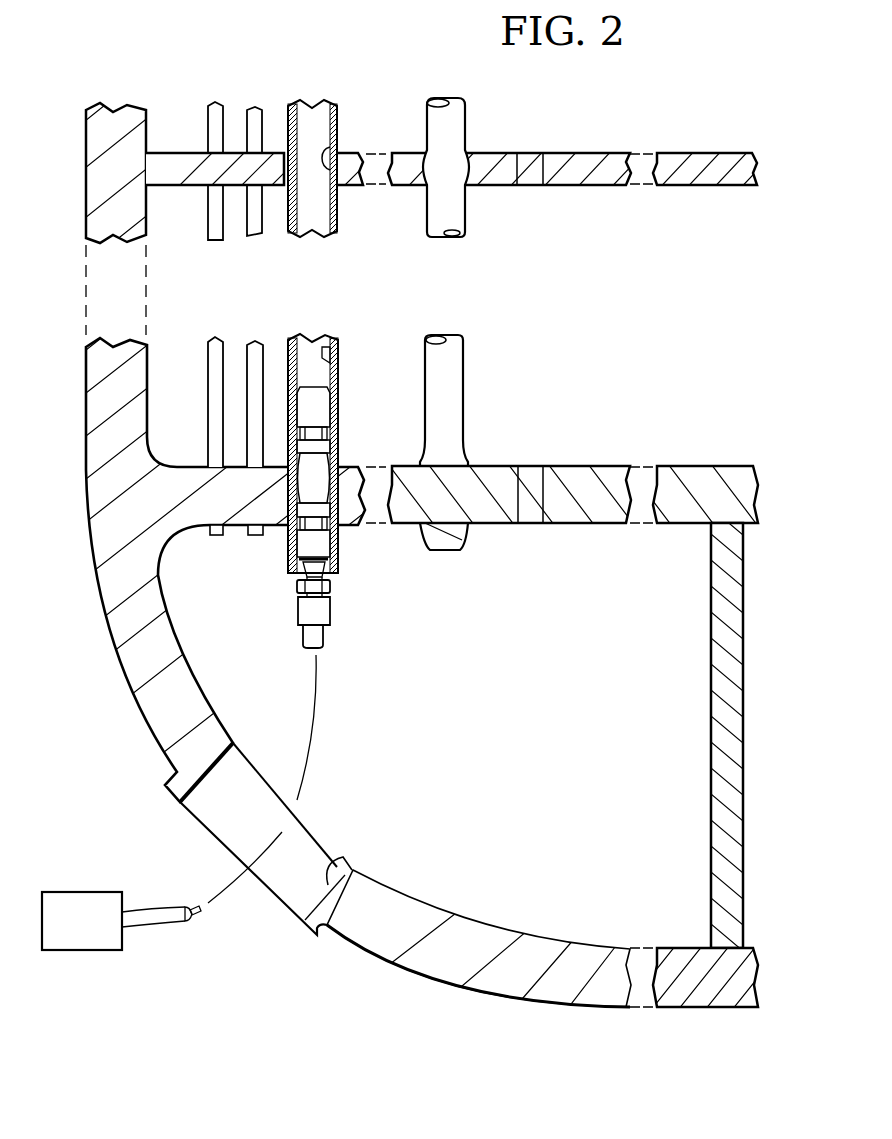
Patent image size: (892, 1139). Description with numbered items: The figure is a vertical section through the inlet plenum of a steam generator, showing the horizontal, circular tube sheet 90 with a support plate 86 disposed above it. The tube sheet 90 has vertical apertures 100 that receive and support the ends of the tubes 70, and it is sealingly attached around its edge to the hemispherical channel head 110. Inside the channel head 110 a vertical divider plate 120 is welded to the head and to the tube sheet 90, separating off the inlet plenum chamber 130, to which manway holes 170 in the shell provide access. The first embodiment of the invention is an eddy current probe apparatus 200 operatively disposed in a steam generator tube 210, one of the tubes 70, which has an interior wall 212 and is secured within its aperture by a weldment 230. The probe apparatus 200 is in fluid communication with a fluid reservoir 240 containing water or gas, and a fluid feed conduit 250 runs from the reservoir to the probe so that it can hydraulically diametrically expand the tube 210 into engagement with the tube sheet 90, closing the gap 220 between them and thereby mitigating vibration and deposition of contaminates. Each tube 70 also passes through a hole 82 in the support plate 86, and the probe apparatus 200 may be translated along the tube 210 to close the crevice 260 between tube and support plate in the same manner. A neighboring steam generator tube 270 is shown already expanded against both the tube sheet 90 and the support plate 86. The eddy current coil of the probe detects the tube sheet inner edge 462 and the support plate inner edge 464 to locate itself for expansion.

The tubes 70 is at (216, 348).
The hole 82 is at (540, 153).
The support plate 86 is at (713, 153).
The tube sheet 90 is at (607, 470).
The apertures 100 is at (540, 470).
The channel head 110 is at (417, 943).
The divider plate 120 is at (728, 667).
The inlet plenum chamber 130 is at (675, 640).
The manway holes 170 is at (340, 862).
The eddy current probe apparatus 200 is at (340, 576).
The steam generator tube 210 is at (338, 405).
The interior wall 212 is at (328, 340).
The gap 220 is at (338, 463).
The weldment 230 is at (342, 528).
The fluid reservoir 240 is at (90, 892).
The fluid feed conduit 250 is at (198, 915).
The crevice 260 is at (330, 160).
The steam generator tube 270 is at (452, 113).
The tube sheet inner edge 462 is at (291, 537).
The support plate inner edge 464 is at (292, 140).